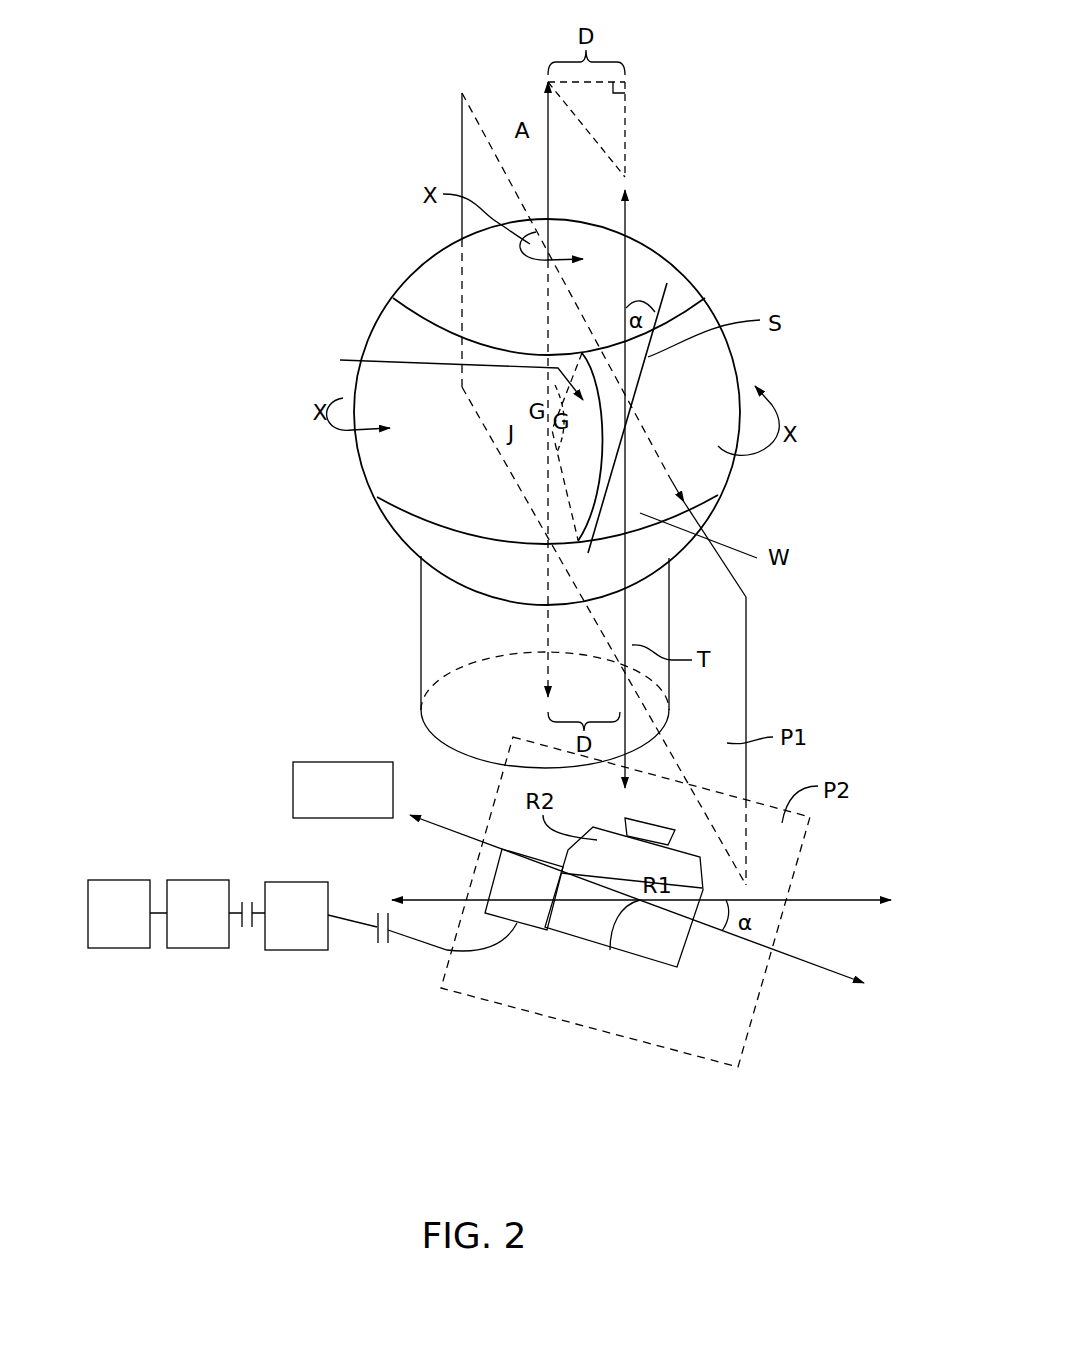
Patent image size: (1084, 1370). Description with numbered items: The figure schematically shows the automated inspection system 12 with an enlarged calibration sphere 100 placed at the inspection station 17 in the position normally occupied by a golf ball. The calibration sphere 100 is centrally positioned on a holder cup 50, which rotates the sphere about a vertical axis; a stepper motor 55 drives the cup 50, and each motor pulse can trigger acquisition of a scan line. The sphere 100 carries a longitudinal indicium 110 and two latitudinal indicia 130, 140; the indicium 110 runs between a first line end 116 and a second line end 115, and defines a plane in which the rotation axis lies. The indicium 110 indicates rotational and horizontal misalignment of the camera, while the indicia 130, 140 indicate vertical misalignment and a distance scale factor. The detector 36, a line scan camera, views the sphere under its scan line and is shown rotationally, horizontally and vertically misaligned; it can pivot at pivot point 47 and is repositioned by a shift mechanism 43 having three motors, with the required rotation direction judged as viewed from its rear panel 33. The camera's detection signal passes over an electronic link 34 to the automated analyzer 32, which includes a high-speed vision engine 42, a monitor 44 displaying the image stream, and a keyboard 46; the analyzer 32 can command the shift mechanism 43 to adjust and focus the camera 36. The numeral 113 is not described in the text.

The calibration sphere 100 is at (740, 221).
The latitudinal indicium 130 is at (412, 317).
The latitudinal indicium 140 is at (412, 517).
The longitudinal indicium 110 is at (340, 360).
The second line end 115 is at (583, 356).
The first line end 116 is at (578, 538).
The light beam plane 113 is at (702, 465).
The holder cup 50 is at (442, 627).
The stepper motor 55 is at (329, 801).
The automated analyzer 32 is at (208, 879).
The keyboard 46 is at (119, 914).
The monitor 44 is at (184, 926).
The high-speed vision engine 42 is at (296, 916).
The electronic link 34 is at (413, 935).
The shift mechanism 43 is at (524, 889).
The rear panel 33 is at (573, 925).
The detector 36 is at (631, 950).
The pivot point 47 is at (620, 941).
The inspection station 17 is at (203, 119).
The automated inspection system 12 is at (909, 1128).